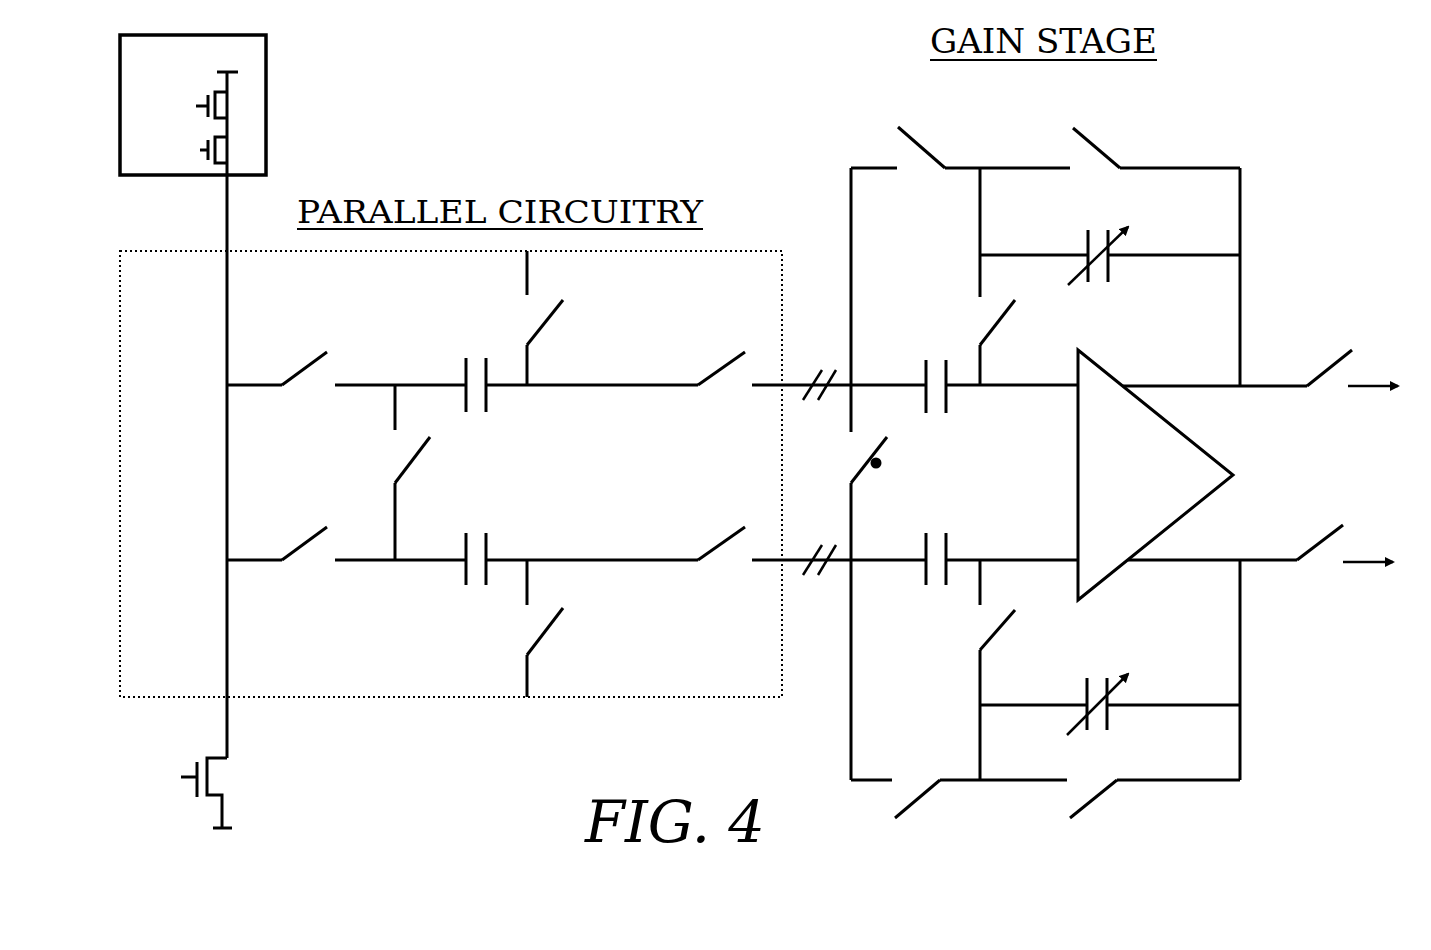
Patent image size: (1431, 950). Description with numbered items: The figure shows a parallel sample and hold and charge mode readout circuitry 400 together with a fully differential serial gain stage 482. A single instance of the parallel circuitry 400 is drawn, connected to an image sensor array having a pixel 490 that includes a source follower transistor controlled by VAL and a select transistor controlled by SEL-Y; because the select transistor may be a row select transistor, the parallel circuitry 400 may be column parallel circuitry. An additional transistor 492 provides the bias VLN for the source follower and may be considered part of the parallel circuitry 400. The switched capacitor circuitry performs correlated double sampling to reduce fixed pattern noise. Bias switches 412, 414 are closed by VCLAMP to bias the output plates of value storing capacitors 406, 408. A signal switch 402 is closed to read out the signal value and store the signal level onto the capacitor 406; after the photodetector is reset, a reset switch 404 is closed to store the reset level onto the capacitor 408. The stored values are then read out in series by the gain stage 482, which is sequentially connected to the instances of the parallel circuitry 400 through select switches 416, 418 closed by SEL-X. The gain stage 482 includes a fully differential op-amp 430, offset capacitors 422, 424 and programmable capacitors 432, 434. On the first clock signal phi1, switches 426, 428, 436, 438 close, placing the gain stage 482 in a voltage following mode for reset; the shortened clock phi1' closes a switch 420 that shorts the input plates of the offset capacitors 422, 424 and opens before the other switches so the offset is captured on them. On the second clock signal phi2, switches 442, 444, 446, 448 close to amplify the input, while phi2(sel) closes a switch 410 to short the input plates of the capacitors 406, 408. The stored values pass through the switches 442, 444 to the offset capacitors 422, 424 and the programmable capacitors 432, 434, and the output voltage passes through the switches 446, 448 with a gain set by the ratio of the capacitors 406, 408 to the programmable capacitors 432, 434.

The parallel circuitry 400 is at (464, 455).
The signal switch 402 is at (277, 349).
The reset switch 404 is at (278, 524).
The capacitor 406 is at (433, 375).
The capacitor 408 is at (433, 572).
The switch 410 is at (464, 498).
The bias switch 412 is at (580, 318).
The bias switch 414 is at (580, 628).
The select switch 416 is at (698, 350).
The select switch 418 is at (698, 524).
The switch 420 is at (907, 470).
The offset capacitor 422 is at (1002, 398).
The offset capacitor 424 is at (1002, 545).
The switch 426 is at (1027, 277).
The switch 428 is at (1032, 670).
The fully differential operational amplifier 430 is at (1155, 463).
The programmable capacitor 432 is at (1110, 240).
The programmable capacitor 434 is at (1110, 692).
The switch 436 is at (1155, 134).
The switch 438 is at (1152, 818).
The switch 442 is at (982, 134).
The switch 444 is at (978, 818).
The switch 446 is at (1260, 354).
The switch 448 is at (1260, 528).
The gain stage 482 is at (826, 142).
The pixel 490 is at (243, 105).
The transistor 492 is at (225, 804).